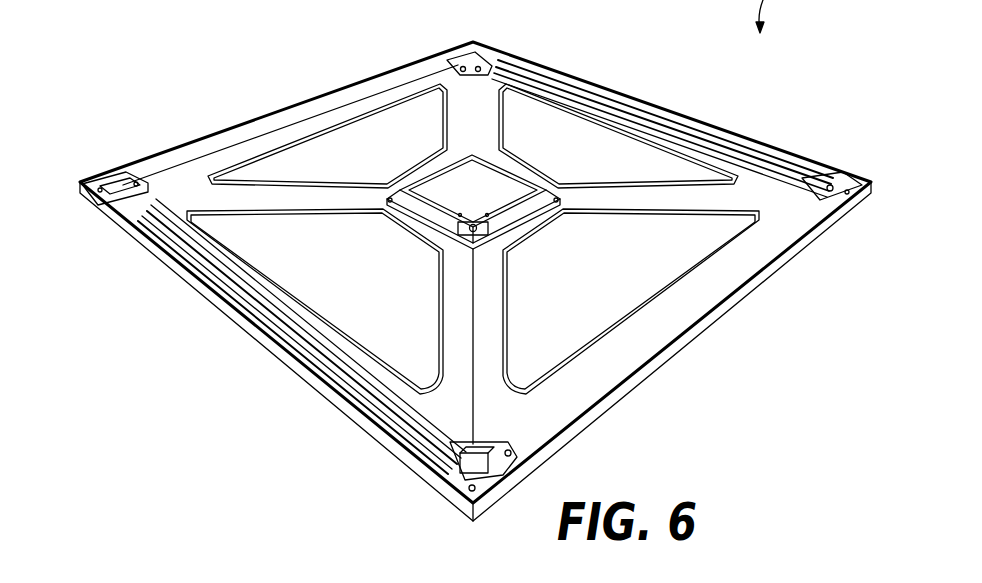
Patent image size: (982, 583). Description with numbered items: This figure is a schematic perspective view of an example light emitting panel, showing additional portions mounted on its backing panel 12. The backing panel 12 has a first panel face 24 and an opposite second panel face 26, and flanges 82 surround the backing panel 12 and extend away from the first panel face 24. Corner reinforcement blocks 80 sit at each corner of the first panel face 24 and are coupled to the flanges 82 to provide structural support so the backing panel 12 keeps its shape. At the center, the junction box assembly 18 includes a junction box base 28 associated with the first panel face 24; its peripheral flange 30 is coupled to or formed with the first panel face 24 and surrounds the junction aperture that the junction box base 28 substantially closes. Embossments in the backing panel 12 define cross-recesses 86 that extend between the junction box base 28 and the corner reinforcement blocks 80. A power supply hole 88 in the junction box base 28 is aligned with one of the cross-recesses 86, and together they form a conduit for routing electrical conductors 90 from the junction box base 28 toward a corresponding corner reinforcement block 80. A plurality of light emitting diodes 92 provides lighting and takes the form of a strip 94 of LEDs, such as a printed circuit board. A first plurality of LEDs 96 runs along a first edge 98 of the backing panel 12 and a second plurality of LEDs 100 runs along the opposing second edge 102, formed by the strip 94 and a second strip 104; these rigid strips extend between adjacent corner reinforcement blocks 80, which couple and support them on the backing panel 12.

The backing panel 12 is at (298, 103).
The junction box assembly 18 is at (415, 140).
The first panel face 24 is at (667, 347).
The second panel face 26 is at (657, 371).
The junction box base 28 is at (507, 187).
The peripheral flange 30 is at (567, 203).
The corner reinforcement blocks 80 is at (460, 62).
The flanges 82 is at (223, 137).
The cross-recesses 86 is at (478, 107).
The power supply hole 88 is at (473, 224).
The electrical conductors 90 is at (477, 310).
The light emitting diodes 92 is at (604, 98).
The strip of LEDs 94 is at (673, 116).
The first plurality of LEDs 96 is at (212, 333).
The first edge 98 is at (377, 448).
The second plurality of LEDs 100 is at (795, 100).
The second edge 102 is at (807, 163).
The second strip of LEDs 104 is at (718, 125).